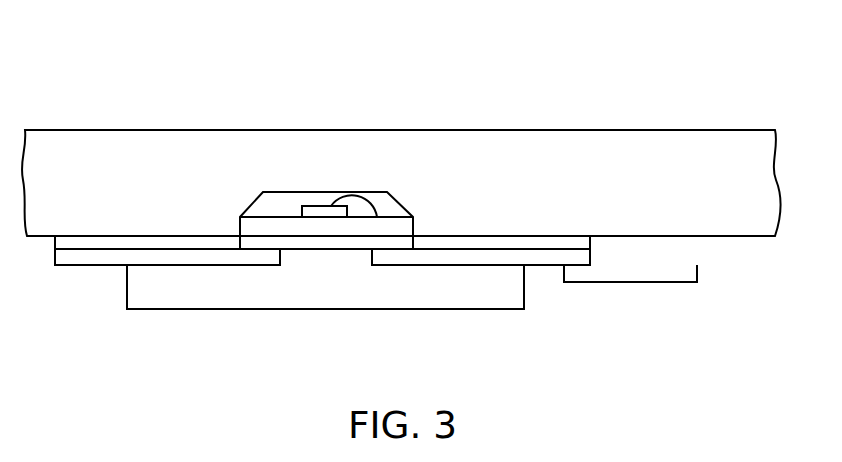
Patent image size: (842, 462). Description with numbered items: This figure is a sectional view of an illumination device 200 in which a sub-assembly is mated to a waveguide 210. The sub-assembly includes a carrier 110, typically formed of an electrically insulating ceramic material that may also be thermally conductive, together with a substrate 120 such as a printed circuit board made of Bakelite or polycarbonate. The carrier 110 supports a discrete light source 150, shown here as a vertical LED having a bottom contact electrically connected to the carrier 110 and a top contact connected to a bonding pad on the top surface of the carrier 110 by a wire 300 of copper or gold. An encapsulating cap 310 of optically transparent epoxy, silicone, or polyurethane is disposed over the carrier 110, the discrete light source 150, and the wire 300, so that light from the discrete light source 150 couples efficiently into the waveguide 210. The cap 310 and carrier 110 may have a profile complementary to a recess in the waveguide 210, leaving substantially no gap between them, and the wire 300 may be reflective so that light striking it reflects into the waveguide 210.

The illumination device 200 is at (128, 41).
The waveguide 210 is at (723, 148).
The encapsulating cap 310 is at (273, 202).
The discrete light source 150 is at (326, 206).
The wire 300 is at (371, 203).
The substrate 120 is at (96, 259).
The carrier 110 is at (334, 242).